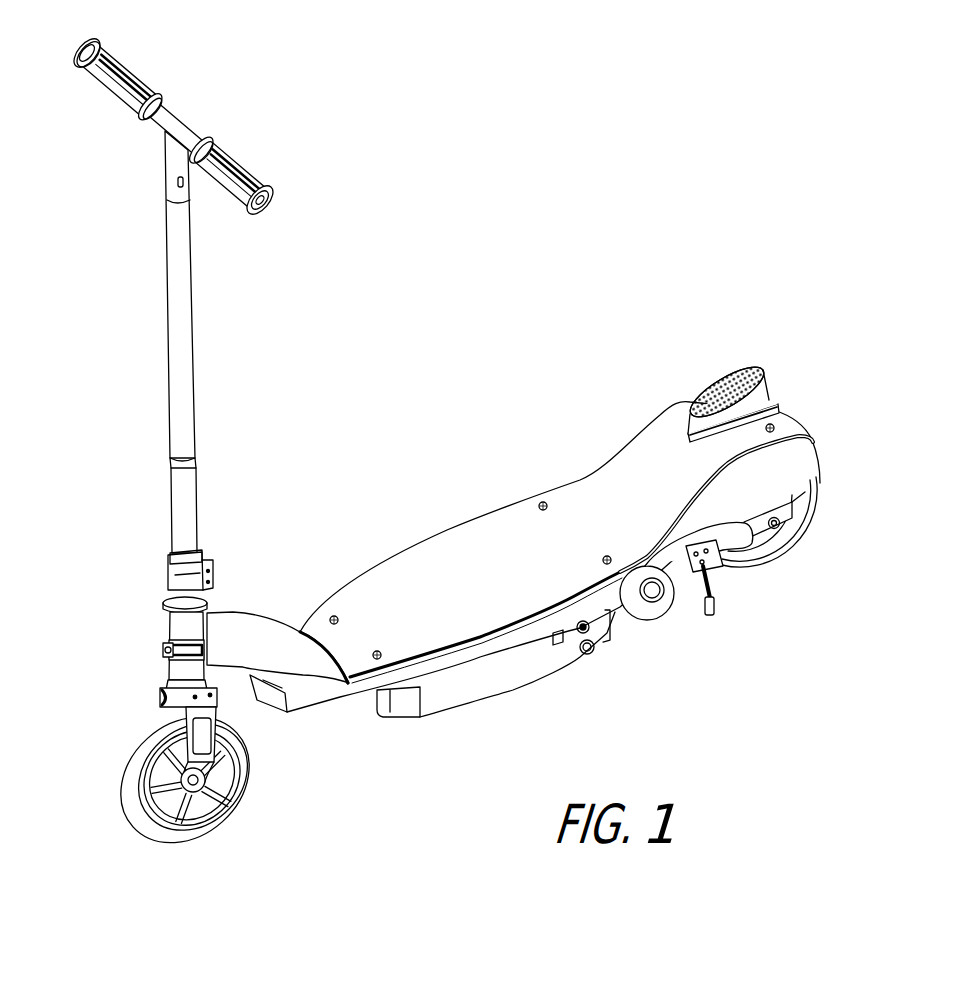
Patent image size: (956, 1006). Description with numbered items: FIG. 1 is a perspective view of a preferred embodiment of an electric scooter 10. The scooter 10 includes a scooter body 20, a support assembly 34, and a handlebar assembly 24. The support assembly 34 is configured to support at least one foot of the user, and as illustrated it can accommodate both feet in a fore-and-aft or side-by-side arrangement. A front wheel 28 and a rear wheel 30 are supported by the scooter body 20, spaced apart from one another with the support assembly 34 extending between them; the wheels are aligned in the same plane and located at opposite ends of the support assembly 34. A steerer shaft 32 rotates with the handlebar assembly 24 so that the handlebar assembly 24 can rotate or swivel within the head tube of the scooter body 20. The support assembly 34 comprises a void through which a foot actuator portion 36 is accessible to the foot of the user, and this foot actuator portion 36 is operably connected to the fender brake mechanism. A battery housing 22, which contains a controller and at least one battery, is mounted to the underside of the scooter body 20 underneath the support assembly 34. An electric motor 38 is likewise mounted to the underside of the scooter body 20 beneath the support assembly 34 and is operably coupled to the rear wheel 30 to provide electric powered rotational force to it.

The scooter 10 is at (556, 232).
The scooter body 20 is at (327, 697).
The battery housing 22 is at (493, 676).
The handlebar assembly 24 is at (183, 118).
The front wheel 28 is at (128, 786).
The rear wheel 30 is at (768, 553).
The steerer shaft 32 is at (177, 388).
The support assembly 34 is at (463, 553).
The foot actuator portion 36 is at (727, 370).
The electric motor 38 is at (640, 607).